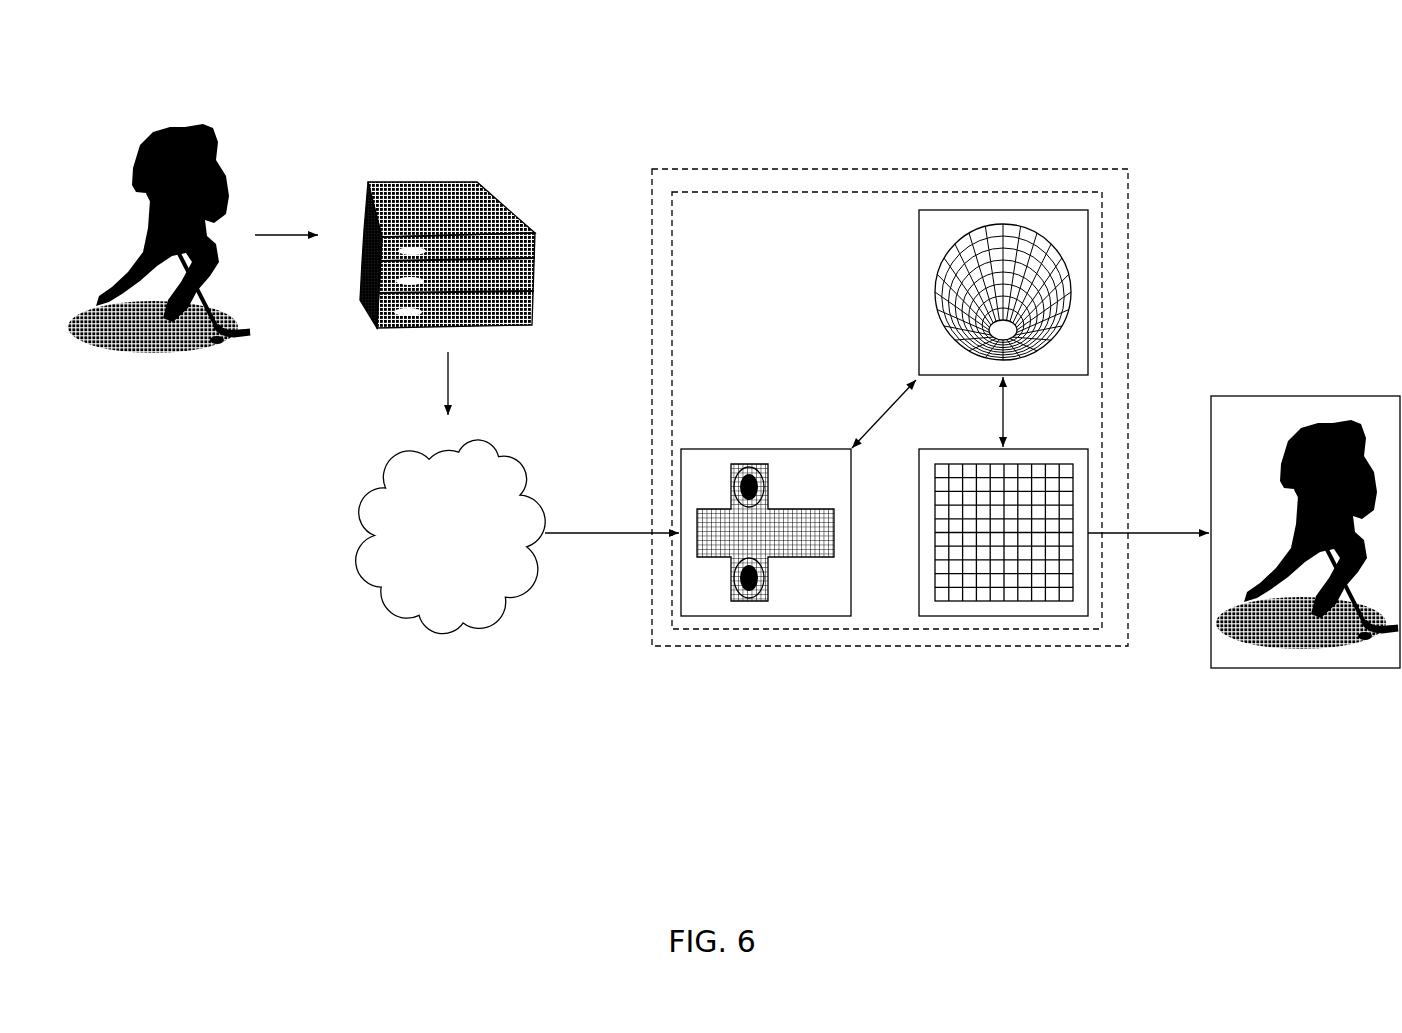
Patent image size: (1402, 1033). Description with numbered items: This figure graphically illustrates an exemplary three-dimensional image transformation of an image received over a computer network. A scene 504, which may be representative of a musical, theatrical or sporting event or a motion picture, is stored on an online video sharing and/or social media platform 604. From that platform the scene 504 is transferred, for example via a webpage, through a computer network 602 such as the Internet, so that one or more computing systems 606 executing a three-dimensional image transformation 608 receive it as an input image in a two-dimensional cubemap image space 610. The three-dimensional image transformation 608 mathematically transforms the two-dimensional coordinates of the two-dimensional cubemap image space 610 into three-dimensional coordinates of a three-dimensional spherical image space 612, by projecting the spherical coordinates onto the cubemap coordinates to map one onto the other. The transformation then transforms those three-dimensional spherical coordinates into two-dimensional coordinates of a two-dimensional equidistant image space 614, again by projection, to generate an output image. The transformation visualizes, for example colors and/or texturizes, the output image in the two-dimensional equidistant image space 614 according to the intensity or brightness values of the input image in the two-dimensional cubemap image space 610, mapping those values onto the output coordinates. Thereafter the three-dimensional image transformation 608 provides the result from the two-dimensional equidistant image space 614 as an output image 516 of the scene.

The scene 504 is at (188, 116).
The online video sharing and/or social media platform 604 is at (425, 151).
The computer network 602 is at (342, 515).
The one or more computing systems 606 is at (898, 168).
The three-dimensional image transformation 608 is at (1000, 191).
The 3D sphere mesh model 612 is at (1068, 209).
The two-dimensional cubemap image space 610 is at (759, 617).
The two-dimensional equidistant image space 614 is at (998, 617).
The output image 516 is at (1320, 394).